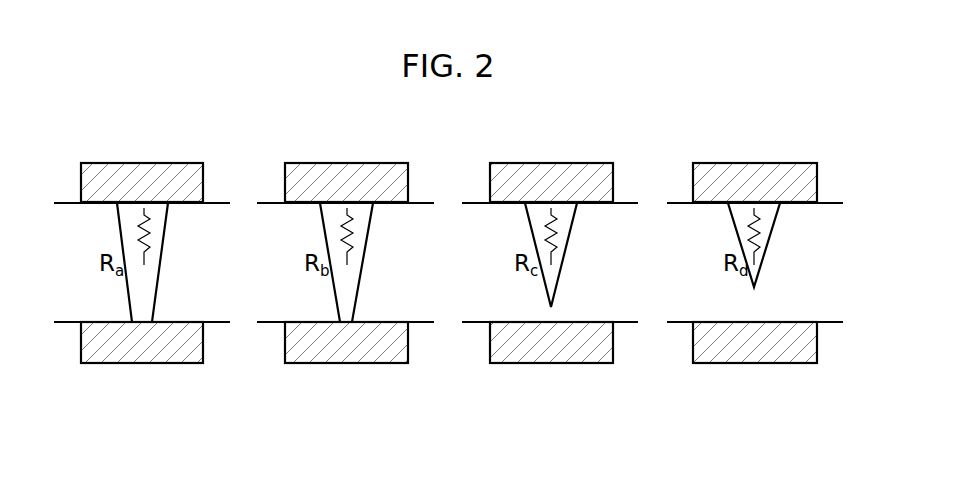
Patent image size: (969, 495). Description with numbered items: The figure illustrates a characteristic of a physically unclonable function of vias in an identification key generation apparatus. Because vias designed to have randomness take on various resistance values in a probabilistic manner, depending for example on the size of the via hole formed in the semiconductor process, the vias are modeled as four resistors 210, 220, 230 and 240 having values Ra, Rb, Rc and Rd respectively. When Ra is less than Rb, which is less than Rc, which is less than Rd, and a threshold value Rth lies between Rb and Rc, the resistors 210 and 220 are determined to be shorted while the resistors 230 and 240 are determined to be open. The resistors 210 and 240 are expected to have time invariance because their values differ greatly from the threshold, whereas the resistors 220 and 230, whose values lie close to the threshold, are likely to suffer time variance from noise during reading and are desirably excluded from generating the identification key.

The resistor 210 is at (125, 163).
The resistor 220 is at (329, 163).
The resistor 230 is at (534, 163).
The resistor 240 is at (739, 163).